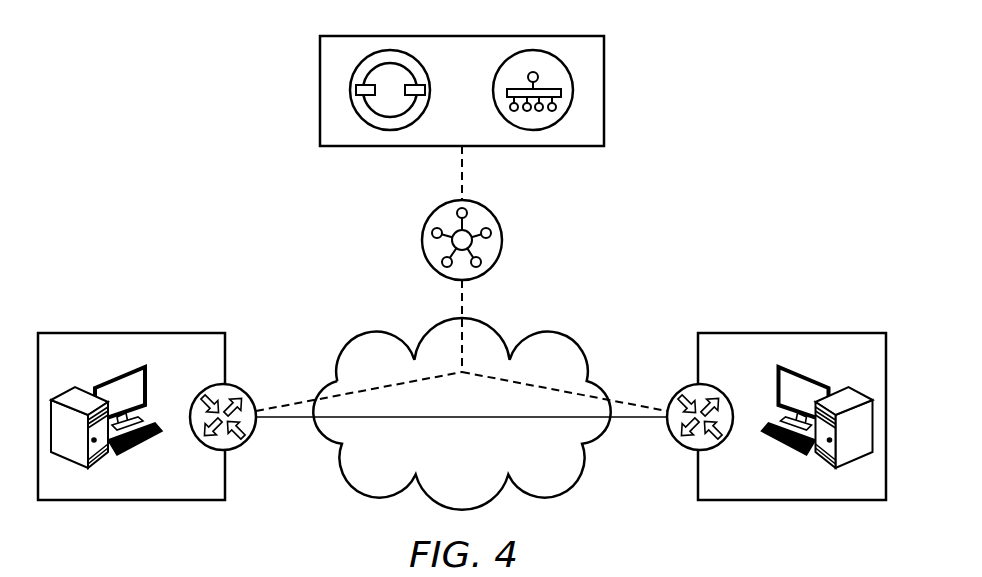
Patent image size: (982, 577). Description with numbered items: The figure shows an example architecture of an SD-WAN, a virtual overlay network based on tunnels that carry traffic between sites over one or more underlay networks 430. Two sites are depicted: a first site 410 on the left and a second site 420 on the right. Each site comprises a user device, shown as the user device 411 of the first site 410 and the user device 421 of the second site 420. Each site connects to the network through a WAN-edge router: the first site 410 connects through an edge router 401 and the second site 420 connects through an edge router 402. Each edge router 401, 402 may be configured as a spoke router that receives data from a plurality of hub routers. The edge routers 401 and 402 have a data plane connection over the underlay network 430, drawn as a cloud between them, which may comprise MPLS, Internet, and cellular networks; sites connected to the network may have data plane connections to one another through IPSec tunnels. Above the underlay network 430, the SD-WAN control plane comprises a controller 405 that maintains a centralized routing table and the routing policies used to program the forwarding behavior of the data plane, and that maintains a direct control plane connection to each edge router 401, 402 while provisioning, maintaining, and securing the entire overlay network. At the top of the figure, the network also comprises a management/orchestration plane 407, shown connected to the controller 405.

The edge router 401 is at (240, 389).
The edge router 402 is at (684, 386).
The controller 405 is at (502, 238).
The management/orchestration plane 407 is at (604, 89).
The first site 410 is at (225, 473).
The user device 411 is at (115, 377).
The second site 420 is at (698, 473).
The user device 421 is at (808, 373).
The underlay network 430 is at (461, 414).